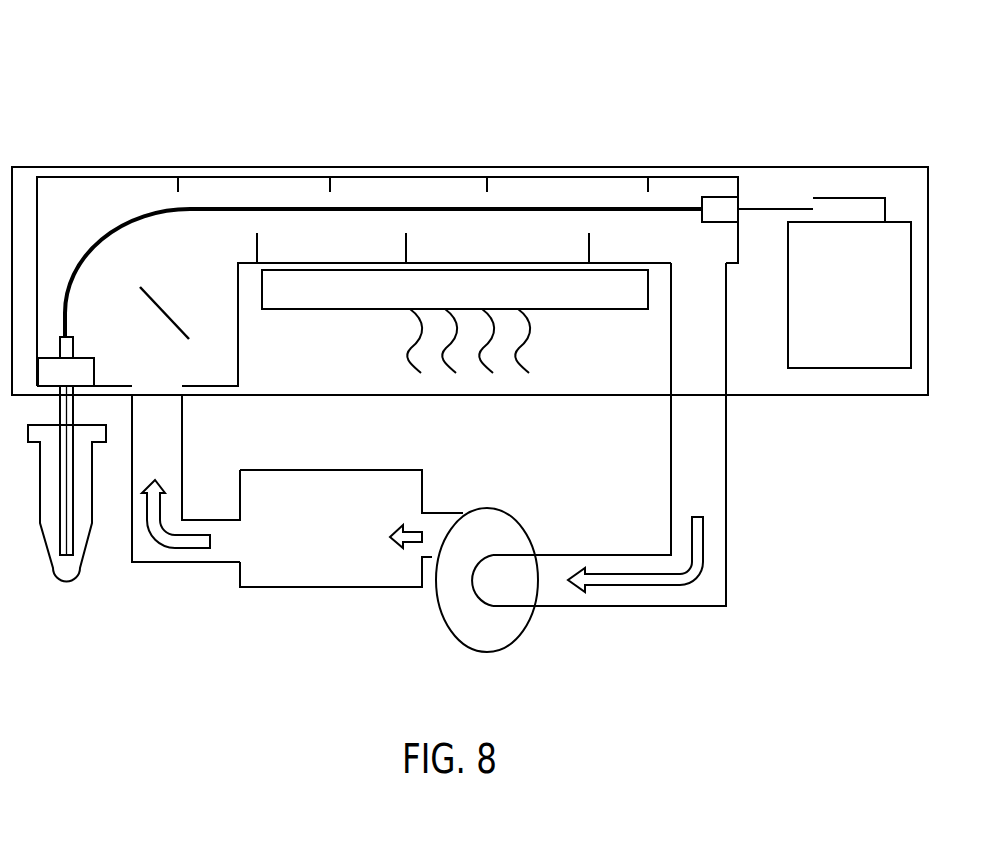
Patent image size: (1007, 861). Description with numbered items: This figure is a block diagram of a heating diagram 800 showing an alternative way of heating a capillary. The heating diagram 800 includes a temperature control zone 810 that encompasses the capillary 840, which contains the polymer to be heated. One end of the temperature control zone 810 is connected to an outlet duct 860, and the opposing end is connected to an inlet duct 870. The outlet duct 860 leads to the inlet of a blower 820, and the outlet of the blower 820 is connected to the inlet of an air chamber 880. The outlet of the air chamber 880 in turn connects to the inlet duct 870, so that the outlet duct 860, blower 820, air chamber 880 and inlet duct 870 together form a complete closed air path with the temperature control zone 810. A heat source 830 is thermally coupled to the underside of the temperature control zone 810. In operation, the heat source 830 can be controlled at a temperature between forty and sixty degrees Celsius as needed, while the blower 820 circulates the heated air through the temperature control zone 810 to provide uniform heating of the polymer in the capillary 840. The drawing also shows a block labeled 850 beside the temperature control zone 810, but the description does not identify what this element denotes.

The heating diagram 800 is at (125, 64).
The temperature control zone 810 is at (734, 202).
The blower 820 is at (503, 640).
The heat source 830 is at (582, 310).
The capillary 840 is at (215, 208).
The control module 850 is at (878, 368).
The outlet duct 860 is at (710, 572).
The inlet duct 870 is at (148, 552).
The air chamber 880 is at (305, 580).